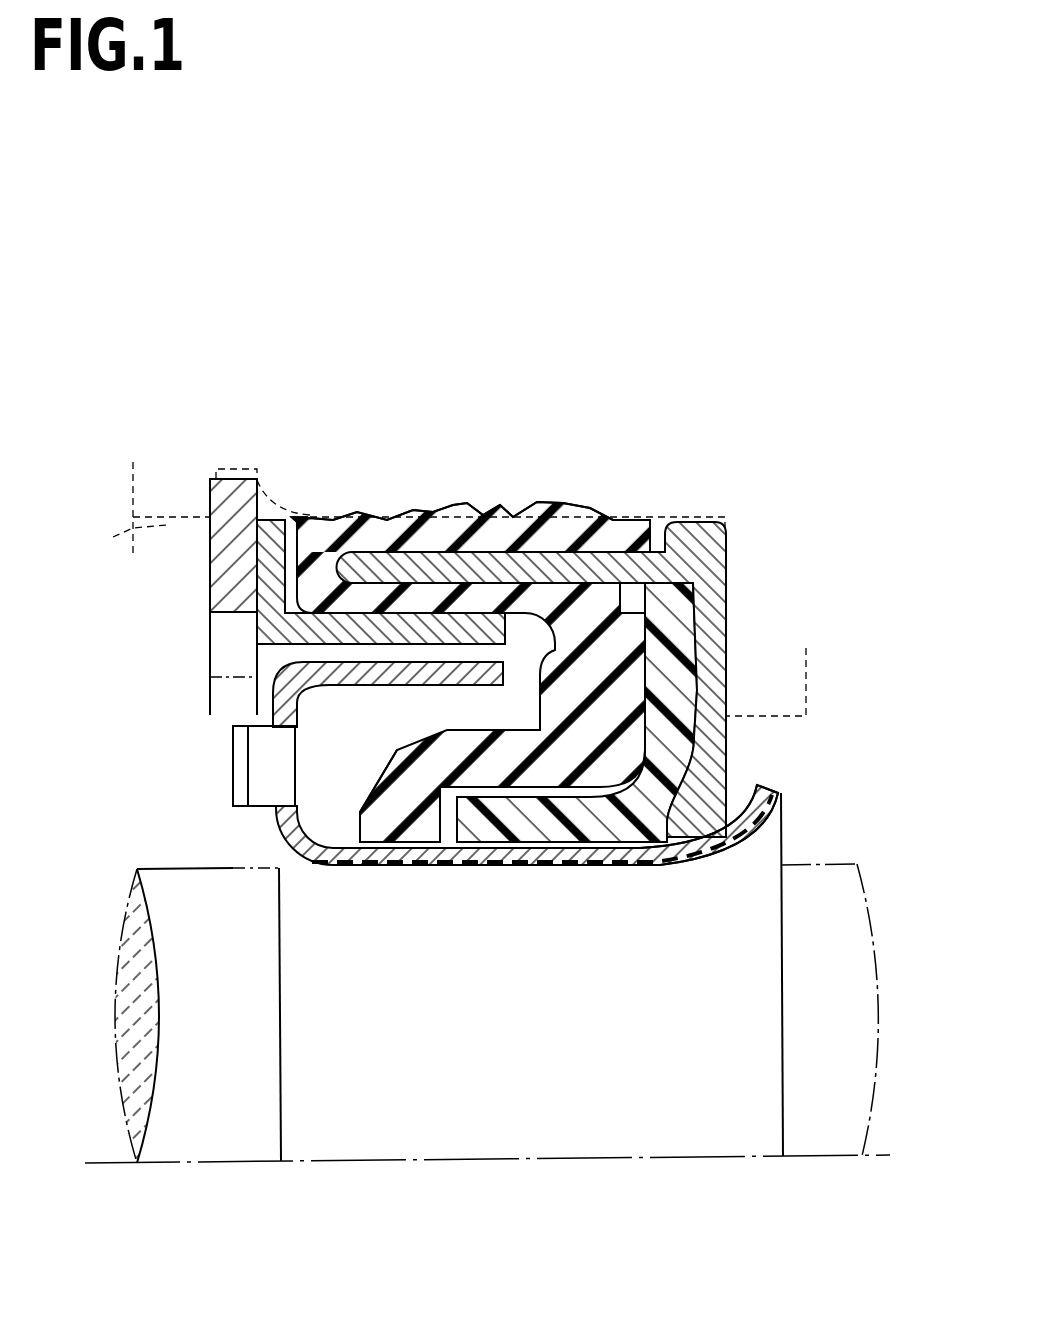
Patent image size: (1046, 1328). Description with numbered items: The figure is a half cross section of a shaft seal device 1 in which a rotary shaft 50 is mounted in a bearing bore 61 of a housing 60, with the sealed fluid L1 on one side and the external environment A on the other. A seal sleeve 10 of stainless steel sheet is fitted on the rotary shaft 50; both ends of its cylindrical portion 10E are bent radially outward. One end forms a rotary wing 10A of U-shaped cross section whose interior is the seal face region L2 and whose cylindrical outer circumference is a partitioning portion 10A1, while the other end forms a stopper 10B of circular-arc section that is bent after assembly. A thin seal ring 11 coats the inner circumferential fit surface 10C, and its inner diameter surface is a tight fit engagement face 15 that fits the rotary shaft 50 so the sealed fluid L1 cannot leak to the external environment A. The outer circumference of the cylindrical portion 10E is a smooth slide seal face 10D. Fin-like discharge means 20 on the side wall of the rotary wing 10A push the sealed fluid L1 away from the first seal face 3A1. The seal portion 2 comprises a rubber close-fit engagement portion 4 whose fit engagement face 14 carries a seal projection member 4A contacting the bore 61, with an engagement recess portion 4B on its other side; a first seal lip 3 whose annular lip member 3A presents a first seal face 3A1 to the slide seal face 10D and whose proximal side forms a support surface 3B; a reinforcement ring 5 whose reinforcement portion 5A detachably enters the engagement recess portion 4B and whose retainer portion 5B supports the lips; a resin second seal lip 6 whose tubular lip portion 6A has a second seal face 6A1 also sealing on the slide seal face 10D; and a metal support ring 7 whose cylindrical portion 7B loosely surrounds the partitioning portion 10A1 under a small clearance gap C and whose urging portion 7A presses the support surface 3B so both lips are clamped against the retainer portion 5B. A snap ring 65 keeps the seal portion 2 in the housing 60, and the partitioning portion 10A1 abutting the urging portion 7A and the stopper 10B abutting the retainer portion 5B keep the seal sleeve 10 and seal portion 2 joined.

The shaft seal device 1 is at (718, 453).
The seal portion 2 is at (569, 702).
The first seal lip 3 is at (593, 733).
The annular lip member 3A is at (362, 816).
The first seal face 3A1 is at (395, 862).
The support surface 3B is at (727, 648).
The close-fit engagement portion 4 is at (432, 541).
The seal projection member 4A is at (563, 507).
The engagement recess portion 4B is at (383, 548).
The reinforcement ring 5 is at (697, 560).
The reinforcement portion 5A is at (595, 575).
The retainer portion 5B is at (714, 741).
The second seal lip 6 is at (668, 694).
The tubular lip portion 6A is at (492, 822).
The second seal face 6A1 is at (507, 860).
The support ring 7 is at (284, 596).
The urging portion 7A is at (590, 538).
The cylindrical portion 7B is at (313, 530).
The seal sleeve 10 is at (496, 801).
The rotary wing 10A is at (283, 695).
The partitioning portion 10A1 is at (290, 653).
The stopper 10B is at (780, 800).
The inner circumferential fit surface 10C is at (558, 860).
The slide seal face 10D is at (603, 860).
The cylindrical portion 10E is at (430, 853).
The seal ring 11 is at (293, 872).
The fit engagement face 14 is at (615, 550).
The tight fit engagement face 15 is at (643, 860).
The discharge means 20 is at (240, 788).
The rotary shaft 50 is at (487, 1014).
The housing 60 is at (150, 490).
The bearing bore 61 is at (122, 540).
The snap ring 65 is at (222, 500).
The external environment A is at (832, 796).
The clearance gap C is at (515, 667).
The sealed fluid L1 is at (180, 771).
The seal face region L2 is at (360, 734).